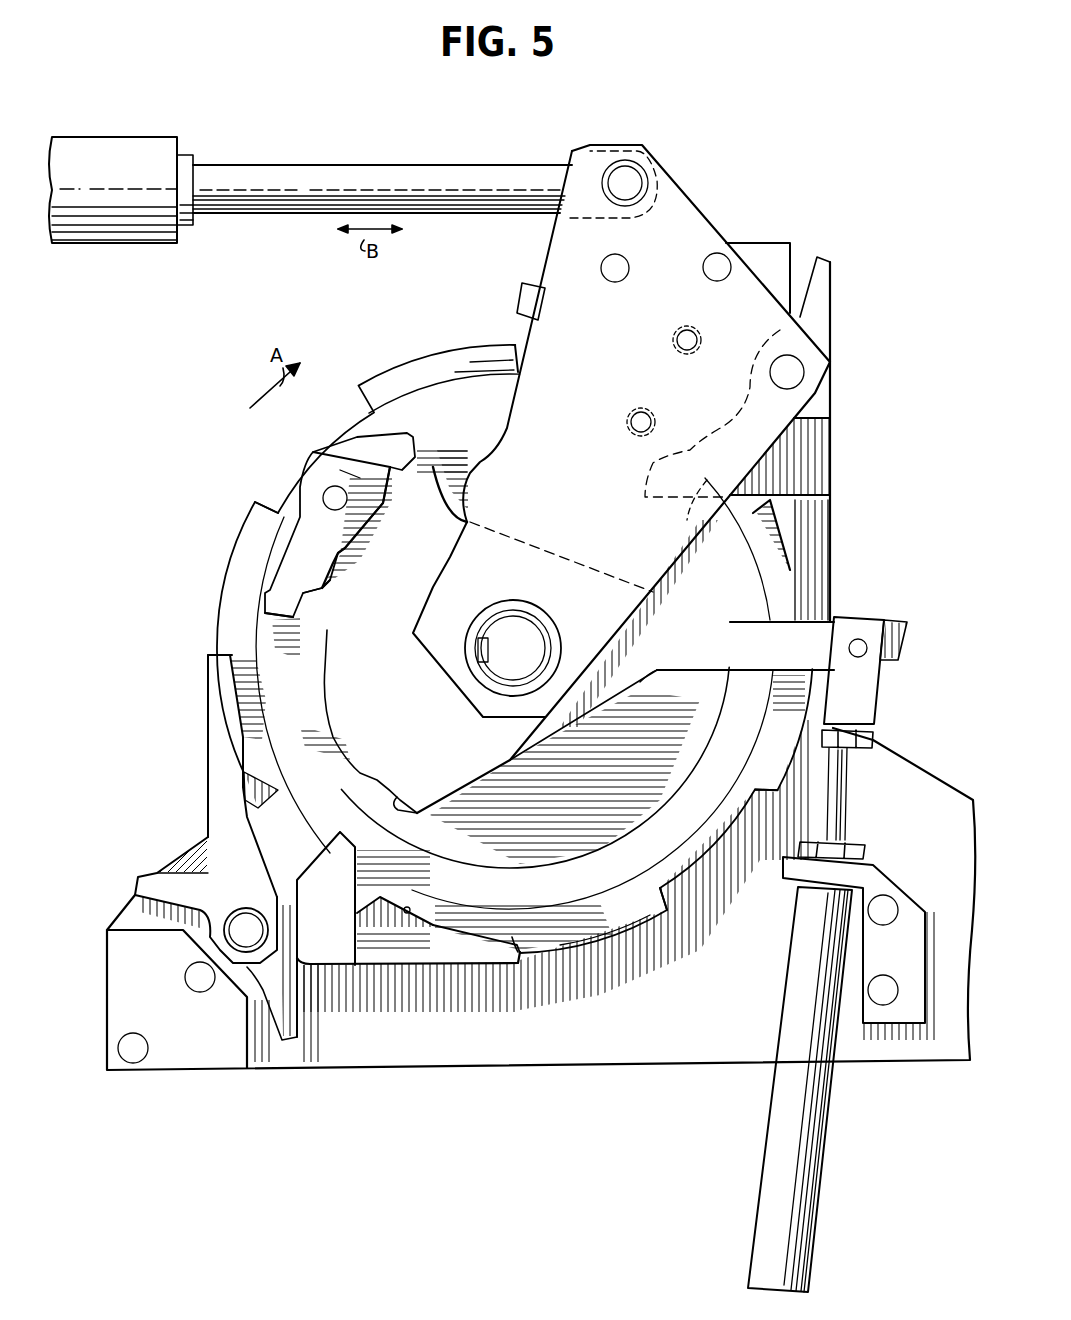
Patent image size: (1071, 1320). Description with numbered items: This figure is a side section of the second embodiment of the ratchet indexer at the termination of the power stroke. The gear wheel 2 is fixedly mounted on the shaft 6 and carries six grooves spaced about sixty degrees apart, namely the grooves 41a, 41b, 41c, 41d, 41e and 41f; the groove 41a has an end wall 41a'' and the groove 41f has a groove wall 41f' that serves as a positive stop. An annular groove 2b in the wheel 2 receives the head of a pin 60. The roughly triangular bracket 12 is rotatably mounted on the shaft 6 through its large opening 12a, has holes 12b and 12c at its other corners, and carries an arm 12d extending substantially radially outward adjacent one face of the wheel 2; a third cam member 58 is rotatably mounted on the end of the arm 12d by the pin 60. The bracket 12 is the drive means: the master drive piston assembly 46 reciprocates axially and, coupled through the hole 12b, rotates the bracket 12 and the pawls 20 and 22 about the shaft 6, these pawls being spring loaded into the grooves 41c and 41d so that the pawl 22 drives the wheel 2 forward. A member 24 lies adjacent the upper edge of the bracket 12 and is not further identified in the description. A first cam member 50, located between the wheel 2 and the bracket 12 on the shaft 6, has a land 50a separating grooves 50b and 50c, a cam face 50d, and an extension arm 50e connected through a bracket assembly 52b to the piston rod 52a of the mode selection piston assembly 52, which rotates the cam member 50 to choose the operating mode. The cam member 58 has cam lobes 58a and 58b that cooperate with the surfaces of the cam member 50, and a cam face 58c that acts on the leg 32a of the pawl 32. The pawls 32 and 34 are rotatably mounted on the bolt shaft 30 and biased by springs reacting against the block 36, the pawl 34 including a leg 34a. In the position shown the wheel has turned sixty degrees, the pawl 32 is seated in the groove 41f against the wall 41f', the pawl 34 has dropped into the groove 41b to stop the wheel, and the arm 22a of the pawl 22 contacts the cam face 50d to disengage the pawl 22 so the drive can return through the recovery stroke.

The gear wheel 2 is at (240, 582).
The annular groove 2b is at (614, 877).
The shaft 6 is at (488, 676).
The bracket member 12 is at (563, 250).
The opening 12a is at (562, 652).
The hole 12b is at (645, 200).
The hole 12c is at (805, 372).
The arm 12d is at (347, 477).
The pawl 20 is at (522, 305).
The pawl 22 is at (818, 593).
The arm 22a is at (690, 495).
The bracket 24 is at (773, 262).
The shaft 30 is at (235, 932).
The pawl 32 is at (458, 948).
The leg 32a is at (337, 882).
The pawl 34 is at (212, 738).
The leg 34a is at (268, 840).
The block 36 is at (195, 1062).
The groove 41a is at (283, 774).
The end wall 41a'' is at (190, 657).
The groove 41b is at (280, 496).
The groove 41c is at (520, 372).
The groove 41d is at (783, 552).
The ring notch 41e is at (708, 862).
The groove 41f is at (412, 902).
The groove wall 41f' is at (526, 914).
The reciprocating piston assembly 46 is at (153, 137).
The first cam member 50 is at (475, 765).
The land 50a is at (333, 738).
The groove 50b is at (343, 563).
The groove 50c is at (398, 798).
The cam face 50d is at (447, 482).
The extension arm 50e is at (748, 660).
The control piston assembly 52 is at (765, 1117).
The piston rod 52a is at (845, 812).
The bracket assembly 52b is at (868, 708).
The third cam member 58 is at (285, 575).
The cam lobe 58a is at (412, 446).
The cam lobe 58b is at (337, 600).
The cam face 58c is at (270, 620).
The pin 60 is at (328, 490).